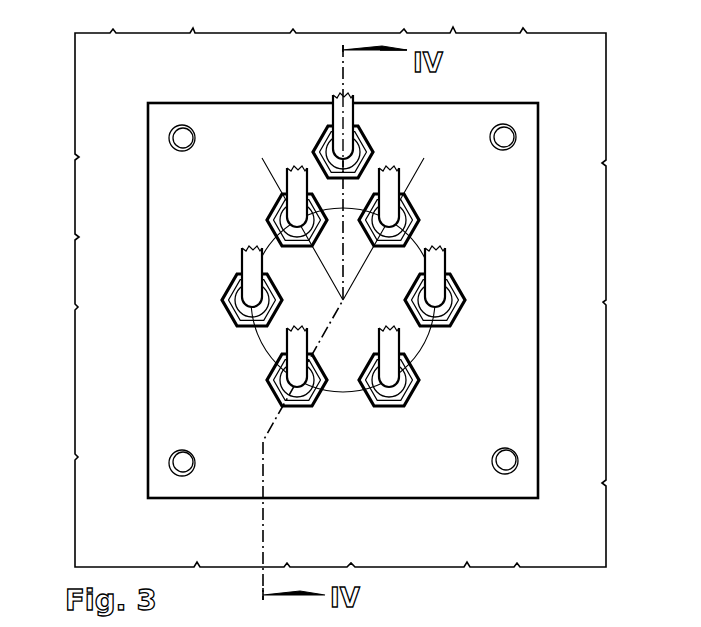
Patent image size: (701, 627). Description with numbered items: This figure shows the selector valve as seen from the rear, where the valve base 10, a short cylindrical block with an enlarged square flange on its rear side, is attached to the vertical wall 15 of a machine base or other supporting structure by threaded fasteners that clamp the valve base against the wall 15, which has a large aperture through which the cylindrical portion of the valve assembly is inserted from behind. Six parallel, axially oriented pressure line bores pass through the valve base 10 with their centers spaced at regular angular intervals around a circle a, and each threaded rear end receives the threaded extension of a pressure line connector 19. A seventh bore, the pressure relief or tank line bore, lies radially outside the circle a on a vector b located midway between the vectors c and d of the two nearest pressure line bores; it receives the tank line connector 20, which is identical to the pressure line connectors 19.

The valve base 10 is at (185, 331).
The vertical wall 15 is at (110, 230).
The pressure line connector 19 is at (410, 218).
The tank line connector 20 is at (363, 148).
The circle a is at (266, 352).
The vector b is at (343, 190).
The vector c is at (283, 192).
The vector d is at (405, 184).